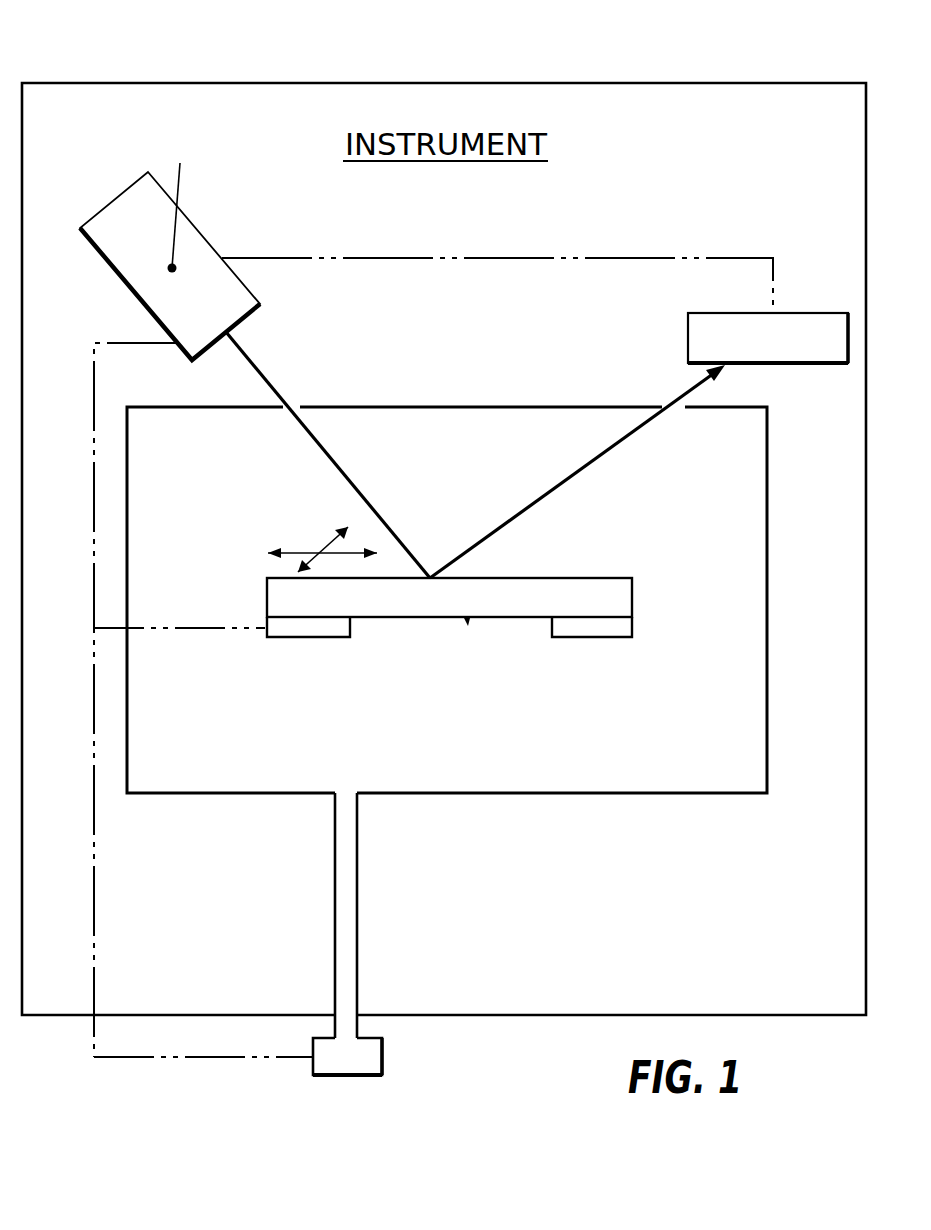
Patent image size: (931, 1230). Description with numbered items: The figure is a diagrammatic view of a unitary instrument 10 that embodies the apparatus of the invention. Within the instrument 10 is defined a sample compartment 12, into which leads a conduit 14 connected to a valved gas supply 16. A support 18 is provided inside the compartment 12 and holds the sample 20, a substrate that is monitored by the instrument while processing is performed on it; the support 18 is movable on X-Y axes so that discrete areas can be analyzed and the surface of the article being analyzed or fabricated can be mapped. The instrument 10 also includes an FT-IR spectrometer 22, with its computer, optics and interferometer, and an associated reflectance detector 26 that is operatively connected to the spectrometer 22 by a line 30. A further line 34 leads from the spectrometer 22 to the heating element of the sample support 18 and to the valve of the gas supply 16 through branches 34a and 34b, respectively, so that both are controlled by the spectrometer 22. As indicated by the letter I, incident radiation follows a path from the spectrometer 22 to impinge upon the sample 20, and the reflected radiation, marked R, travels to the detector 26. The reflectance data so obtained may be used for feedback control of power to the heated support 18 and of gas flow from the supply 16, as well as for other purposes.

The instrument 10 is at (681, 76).
The sample compartment 12 is at (767, 630).
The conduit 14 is at (350, 945).
The valved gas supply 16 is at (350, 1063).
The support 18 is at (330, 630).
The sample 20 is at (607, 600).
The spectrometer 22 is at (200, 248).
The reflectance detector 26 is at (687, 337).
The line 30 is at (474, 259).
The line 34 is at (95, 385).
The branch 34a is at (212, 630).
The branch 34b is at (190, 1057).
The incident radiation I is at (267, 380).
The reflected beam R is at (680, 402).